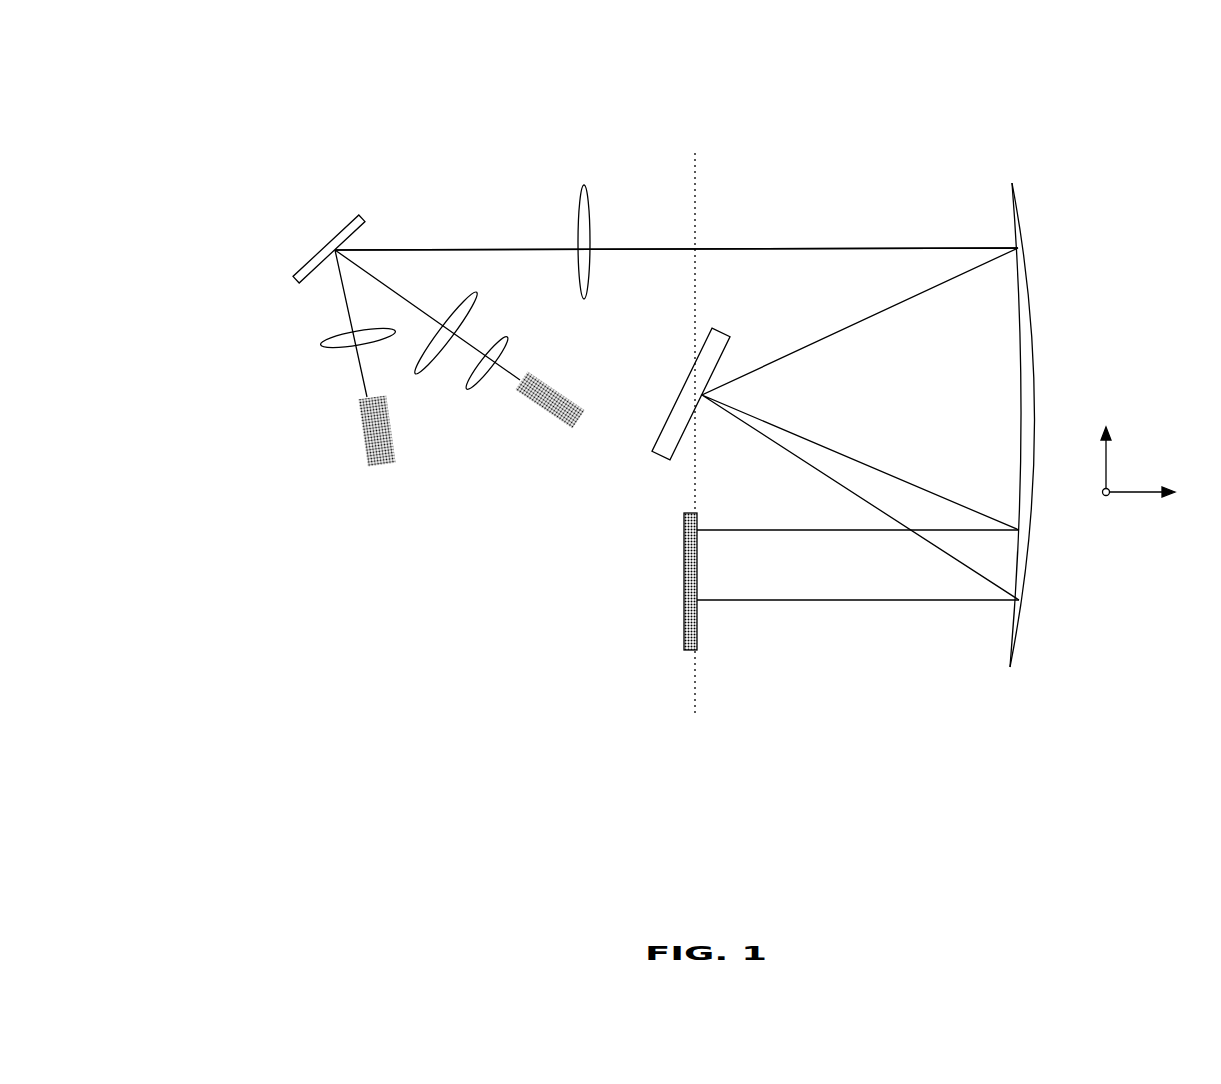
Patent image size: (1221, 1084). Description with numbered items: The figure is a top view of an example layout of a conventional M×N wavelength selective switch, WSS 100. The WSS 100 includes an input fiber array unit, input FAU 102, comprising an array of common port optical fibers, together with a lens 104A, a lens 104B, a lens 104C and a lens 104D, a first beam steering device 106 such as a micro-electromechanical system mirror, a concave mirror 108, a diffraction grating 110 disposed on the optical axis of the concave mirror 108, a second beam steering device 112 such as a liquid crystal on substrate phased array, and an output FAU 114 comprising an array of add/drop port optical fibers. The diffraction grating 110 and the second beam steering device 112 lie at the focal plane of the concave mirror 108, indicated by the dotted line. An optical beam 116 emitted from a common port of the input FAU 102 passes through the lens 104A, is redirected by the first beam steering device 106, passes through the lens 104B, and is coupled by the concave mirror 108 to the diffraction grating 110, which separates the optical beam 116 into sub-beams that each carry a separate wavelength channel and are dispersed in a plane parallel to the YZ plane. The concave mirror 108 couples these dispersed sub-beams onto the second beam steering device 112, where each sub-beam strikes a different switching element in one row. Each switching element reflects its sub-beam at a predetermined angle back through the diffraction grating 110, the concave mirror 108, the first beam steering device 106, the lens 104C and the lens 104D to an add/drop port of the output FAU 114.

The M×N WSS 100 is at (208, 67).
The input fiber array unit 102 is at (367, 464).
The lens 104A is at (353, 348).
The lens 104B is at (583, 182).
The lens 104C is at (433, 362).
The lens 104D is at (487, 382).
The first beam steering device 106 is at (365, 212).
The concave mirror 108 is at (1035, 305).
The diffraction grating 110 is at (657, 458).
The second beam steering device 112 is at (683, 562).
The output fiber array unit 114 is at (547, 382).
The optical beam 116 is at (437, 250).